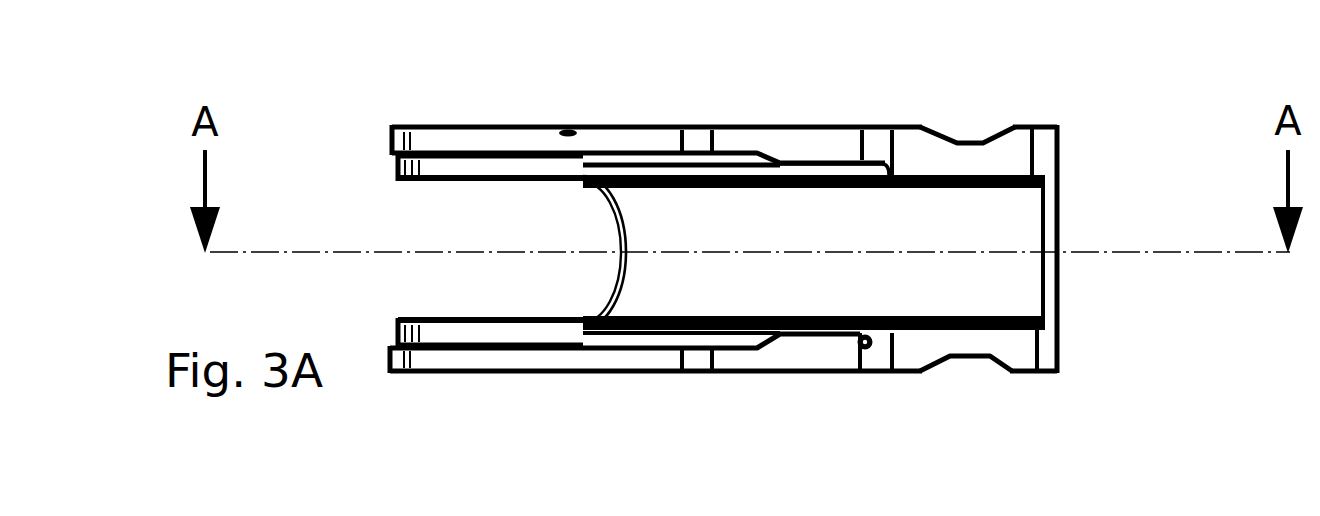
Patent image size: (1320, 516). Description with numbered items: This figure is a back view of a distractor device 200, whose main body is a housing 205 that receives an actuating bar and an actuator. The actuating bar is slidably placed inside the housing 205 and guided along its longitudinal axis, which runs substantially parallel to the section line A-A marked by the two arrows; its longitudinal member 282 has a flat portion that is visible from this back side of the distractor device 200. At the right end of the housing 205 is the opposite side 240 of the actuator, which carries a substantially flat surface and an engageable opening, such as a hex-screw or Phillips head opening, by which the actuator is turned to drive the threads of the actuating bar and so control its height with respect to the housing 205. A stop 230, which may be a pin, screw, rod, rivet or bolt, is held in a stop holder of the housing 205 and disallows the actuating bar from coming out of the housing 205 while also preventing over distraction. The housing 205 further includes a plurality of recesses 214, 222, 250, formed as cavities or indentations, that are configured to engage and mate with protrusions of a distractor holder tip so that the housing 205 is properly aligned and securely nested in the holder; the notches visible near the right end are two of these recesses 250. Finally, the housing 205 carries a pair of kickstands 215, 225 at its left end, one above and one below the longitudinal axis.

The distractor device 200 is at (1185, 63).
The housing 205 is at (708, 78).
The recess 214 is at (574, 372).
The kickstand 215 is at (394, 372).
The recess 222 is at (563, 128).
The kickstand 225 is at (392, 138).
The stop 230 is at (881, 372).
The opposite side of actuator 240 is at (1063, 192).
The recess 250 is at (990, 128).
The longitudinal member 282 is at (1002, 272).